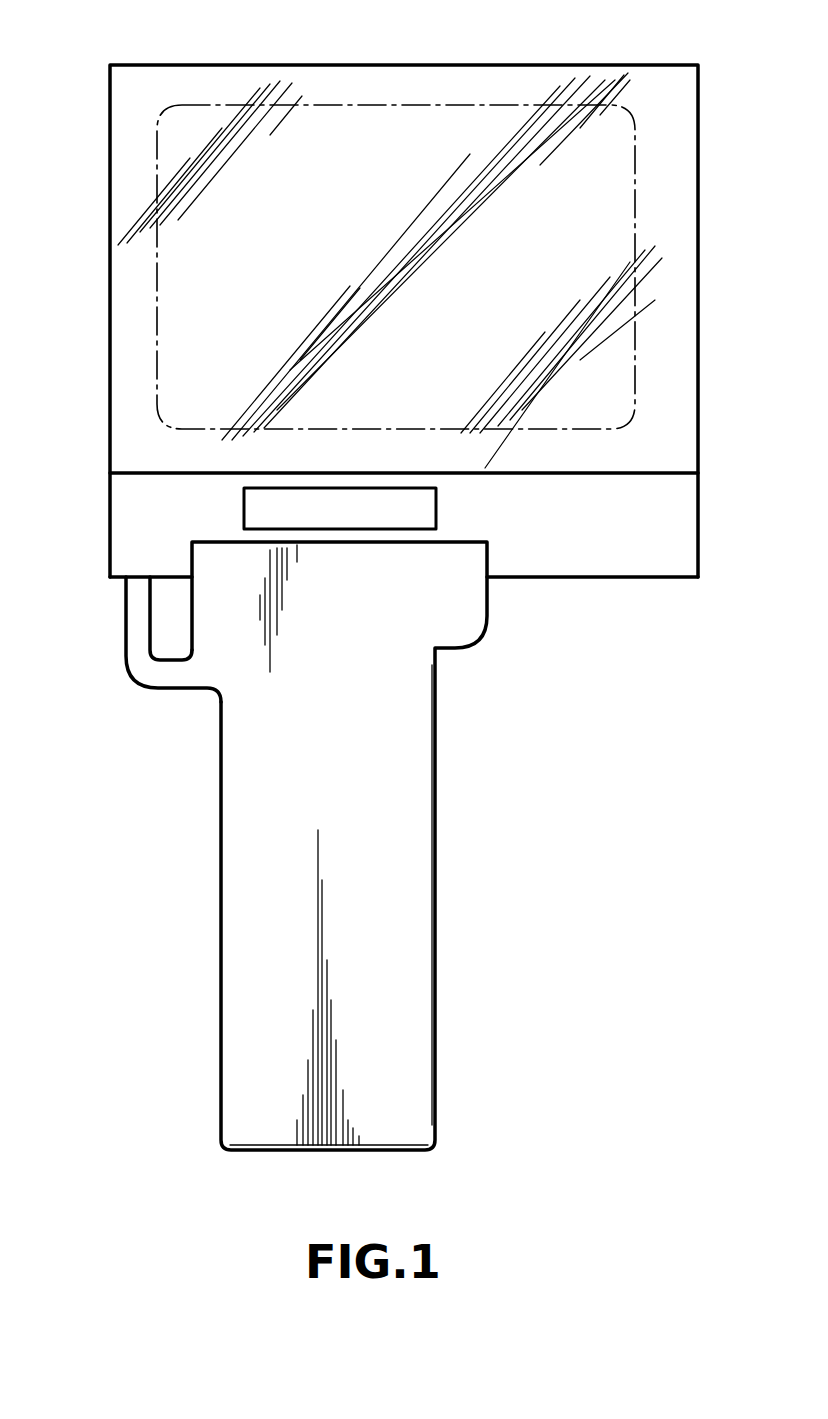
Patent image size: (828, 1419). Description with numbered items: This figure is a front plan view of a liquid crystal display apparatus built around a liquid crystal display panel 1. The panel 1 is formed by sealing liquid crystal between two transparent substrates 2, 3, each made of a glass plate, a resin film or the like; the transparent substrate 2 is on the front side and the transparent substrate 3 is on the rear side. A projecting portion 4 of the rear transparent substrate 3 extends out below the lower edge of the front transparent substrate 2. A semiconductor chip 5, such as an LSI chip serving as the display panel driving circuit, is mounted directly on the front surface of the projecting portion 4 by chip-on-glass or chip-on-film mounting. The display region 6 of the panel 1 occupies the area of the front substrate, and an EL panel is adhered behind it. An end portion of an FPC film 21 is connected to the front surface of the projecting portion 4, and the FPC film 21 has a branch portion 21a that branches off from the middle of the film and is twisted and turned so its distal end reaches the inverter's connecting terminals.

The liquid crystal display panel 1 is at (524, 90).
The transparent substrate 2 is at (632, 88).
The transparent substrate 3 is at (680, 527).
The projecting portion 4 is at (637, 555).
The semiconductor chip 5 is at (262, 504).
The display region 6 is at (343, 133).
The FPC film 21 is at (418, 936).
The branch portion 21a is at (140, 637).